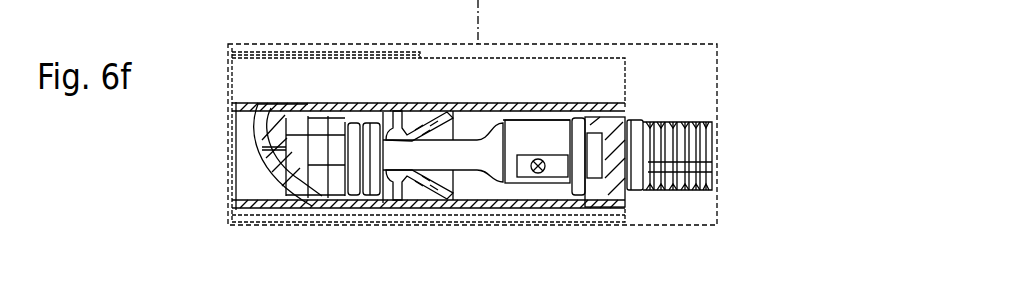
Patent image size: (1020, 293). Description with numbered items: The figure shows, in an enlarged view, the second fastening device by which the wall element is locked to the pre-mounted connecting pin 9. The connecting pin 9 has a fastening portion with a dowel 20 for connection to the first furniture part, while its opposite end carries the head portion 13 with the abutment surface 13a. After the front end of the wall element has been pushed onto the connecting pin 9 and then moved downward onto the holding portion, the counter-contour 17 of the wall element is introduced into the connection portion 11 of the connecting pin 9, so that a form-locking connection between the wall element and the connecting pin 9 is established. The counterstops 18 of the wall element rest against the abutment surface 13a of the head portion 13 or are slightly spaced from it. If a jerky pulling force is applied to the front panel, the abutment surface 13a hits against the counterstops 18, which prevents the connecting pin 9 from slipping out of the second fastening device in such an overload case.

The connecting pin 9 is at (450, 158).
The connection portion 11 is at (603, 150).
The head portion 13 is at (342, 208).
The abutment surface 13a is at (380, 130).
The counter-contour 17 is at (590, 147).
The counterstops 18 is at (387, 130).
The dowel 20 is at (688, 144).